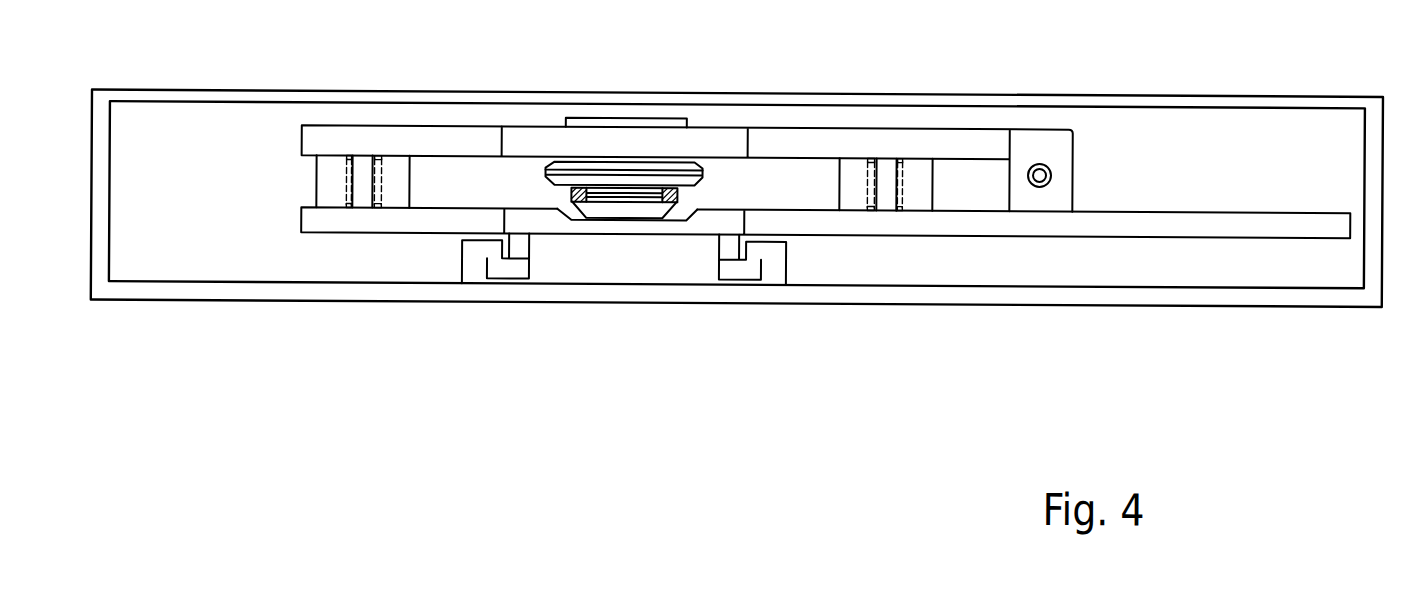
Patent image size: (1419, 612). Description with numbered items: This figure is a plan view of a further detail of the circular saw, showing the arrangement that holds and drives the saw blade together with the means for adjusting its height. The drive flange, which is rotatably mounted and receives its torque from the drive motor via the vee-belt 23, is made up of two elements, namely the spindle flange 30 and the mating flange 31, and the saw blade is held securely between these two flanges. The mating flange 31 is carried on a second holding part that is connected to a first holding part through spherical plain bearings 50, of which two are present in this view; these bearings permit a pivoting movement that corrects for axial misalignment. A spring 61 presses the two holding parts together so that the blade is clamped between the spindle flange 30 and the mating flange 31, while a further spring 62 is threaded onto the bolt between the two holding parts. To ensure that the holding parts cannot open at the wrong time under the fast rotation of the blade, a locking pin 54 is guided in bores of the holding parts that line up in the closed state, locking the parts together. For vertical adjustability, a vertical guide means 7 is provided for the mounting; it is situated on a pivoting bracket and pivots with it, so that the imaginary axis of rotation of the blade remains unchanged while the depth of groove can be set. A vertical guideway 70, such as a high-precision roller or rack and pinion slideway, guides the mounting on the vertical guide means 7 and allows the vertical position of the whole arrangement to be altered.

The vertical guide means 7 is at (643, 287).
The vee-belt 23 is at (675, 162).
The spindle flange 30 is at (660, 205).
The mating flange 31 is at (574, 159).
The spherical plain bearing 50 is at (330, 161).
The locking pin 54 is at (1038, 167).
The spring 61 is at (367, 160).
The further spring 62 is at (345, 186).
The vertical guideway 70 is at (495, 263).